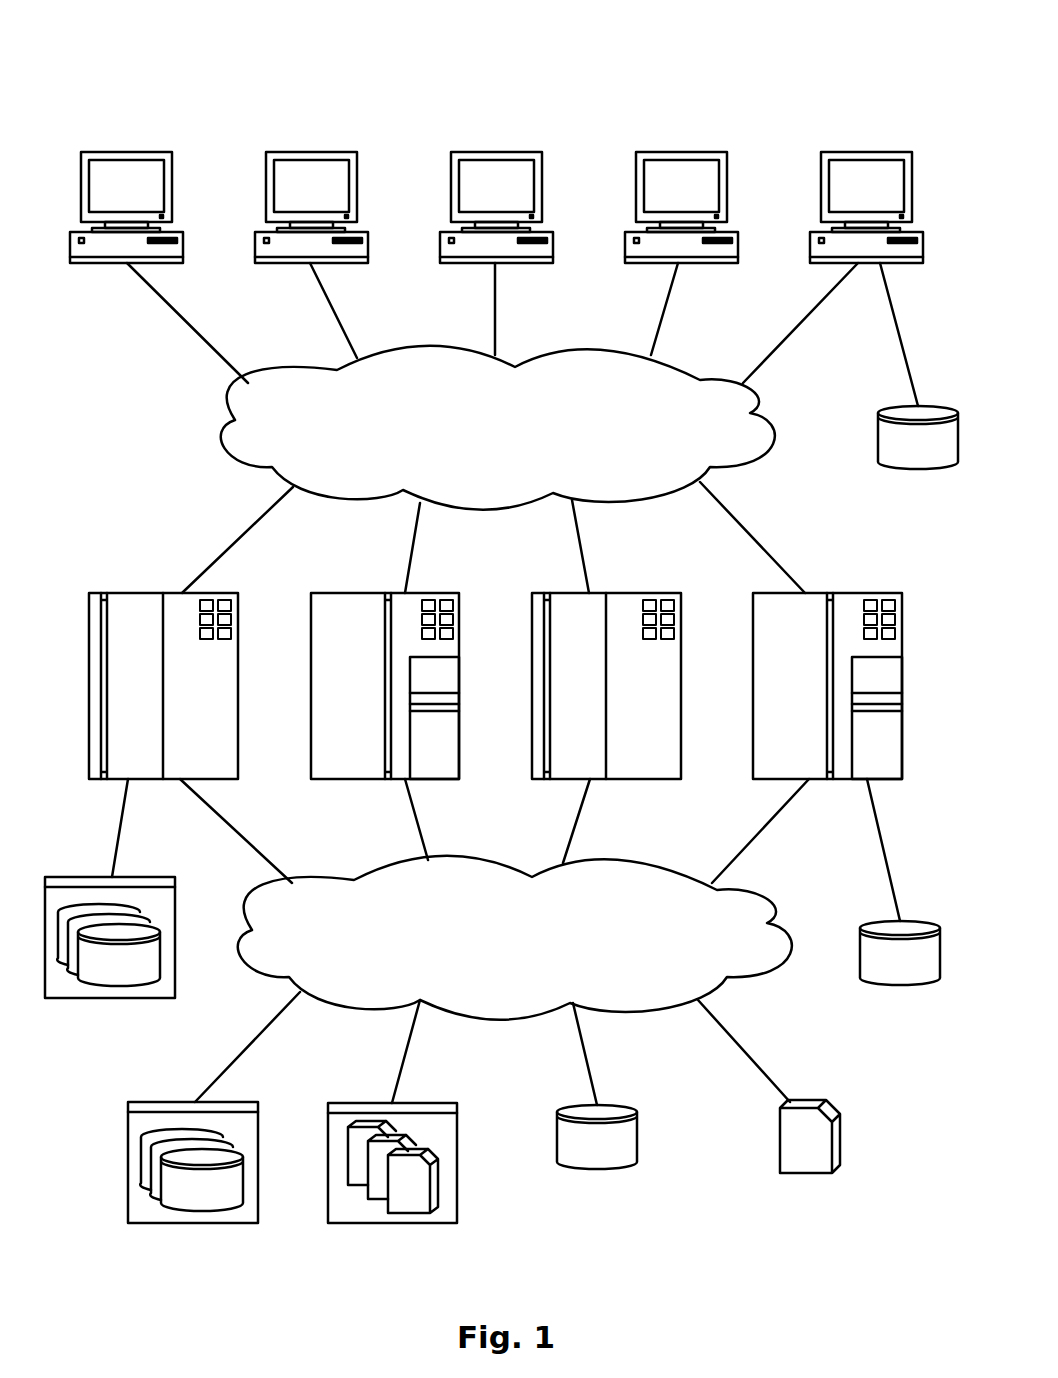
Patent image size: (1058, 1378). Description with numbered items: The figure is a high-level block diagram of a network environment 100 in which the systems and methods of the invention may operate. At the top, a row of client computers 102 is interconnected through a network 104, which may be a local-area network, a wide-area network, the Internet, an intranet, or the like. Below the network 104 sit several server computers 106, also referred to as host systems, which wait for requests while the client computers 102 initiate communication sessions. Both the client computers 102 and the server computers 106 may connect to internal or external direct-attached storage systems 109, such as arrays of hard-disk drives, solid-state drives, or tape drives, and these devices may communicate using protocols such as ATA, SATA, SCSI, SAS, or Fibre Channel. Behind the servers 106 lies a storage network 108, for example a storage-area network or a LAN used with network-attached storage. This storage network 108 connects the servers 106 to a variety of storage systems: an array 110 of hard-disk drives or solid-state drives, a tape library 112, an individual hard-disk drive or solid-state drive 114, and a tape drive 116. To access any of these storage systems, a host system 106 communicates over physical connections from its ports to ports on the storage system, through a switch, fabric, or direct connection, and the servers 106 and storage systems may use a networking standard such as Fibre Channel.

The network environment 100 is at (200, 75).
The client computer 102 is at (110, 193).
The network 104 is at (514, 454).
The server computer 106 is at (119, 693).
The storage network 108 is at (531, 964).
The direct-attached storage system 109 is at (918, 468).
The array of hard-disk drives or solid-state drives 110 is at (195, 1225).
The tape library 112 is at (392, 1225).
The individual hard-disk drive or solid-state drive 114 is at (596, 1168).
The tape drive 116 is at (806, 1177).